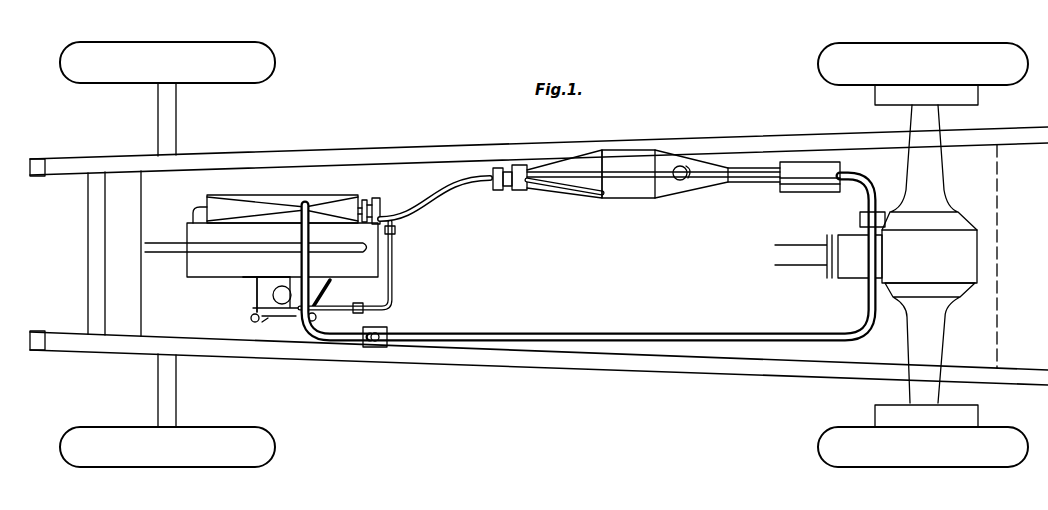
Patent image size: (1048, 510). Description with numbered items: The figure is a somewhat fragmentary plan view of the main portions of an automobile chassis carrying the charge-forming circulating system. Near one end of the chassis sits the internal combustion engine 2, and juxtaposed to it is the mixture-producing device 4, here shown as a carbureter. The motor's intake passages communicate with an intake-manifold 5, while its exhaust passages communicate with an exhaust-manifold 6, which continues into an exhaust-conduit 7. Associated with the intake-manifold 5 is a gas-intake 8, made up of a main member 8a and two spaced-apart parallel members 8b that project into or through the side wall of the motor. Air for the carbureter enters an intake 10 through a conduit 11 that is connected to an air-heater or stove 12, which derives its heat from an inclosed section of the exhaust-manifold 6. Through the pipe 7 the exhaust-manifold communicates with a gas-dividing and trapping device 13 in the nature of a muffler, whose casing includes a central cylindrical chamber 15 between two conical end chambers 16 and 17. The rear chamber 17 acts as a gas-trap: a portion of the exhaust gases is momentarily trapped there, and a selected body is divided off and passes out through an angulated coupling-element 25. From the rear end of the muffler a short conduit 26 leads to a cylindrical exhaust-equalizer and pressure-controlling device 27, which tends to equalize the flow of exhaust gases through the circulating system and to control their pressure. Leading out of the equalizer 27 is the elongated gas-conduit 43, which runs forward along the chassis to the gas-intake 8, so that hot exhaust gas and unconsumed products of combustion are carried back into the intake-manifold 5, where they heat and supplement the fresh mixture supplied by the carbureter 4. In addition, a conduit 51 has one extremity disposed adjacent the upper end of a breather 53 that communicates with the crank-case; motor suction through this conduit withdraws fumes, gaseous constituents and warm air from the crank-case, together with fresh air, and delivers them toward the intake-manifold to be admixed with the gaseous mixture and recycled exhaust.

The internal combustion engine 2 is at (207, 278).
The mixture-producing device 4 is at (256, 328).
The intake-manifold 5 is at (286, 272).
The exhaust-manifold 6 is at (366, 200).
The exhaust-conduit 7 is at (428, 218).
The gas-intake 8 is at (1005, 343).
The main member 8a is at (273, 322).
The spaced-apart parallel members 8b is at (255, 289).
The intake of the carbureter 10 is at (283, 322).
The conduit 11 is at (318, 262).
The air-heater 12 is at (302, 195).
The gas-dividing and trapping-device 13 is at (628, 197).
The central cylindrical chamber 15 is at (625, 155).
The conical end chamber 16 is at (580, 188).
The conical end chamber 17 is at (705, 183).
The angulated coupling-element 25 is at (676, 190).
The short conduit 26 is at (768, 181).
The exhaust-equalizer and pressure-controlling device 27 is at (800, 170).
The elongated gas-conduit 43 is at (790, 333).
The conduit 51 is at (326, 322).
The breather 53 is at (347, 267).